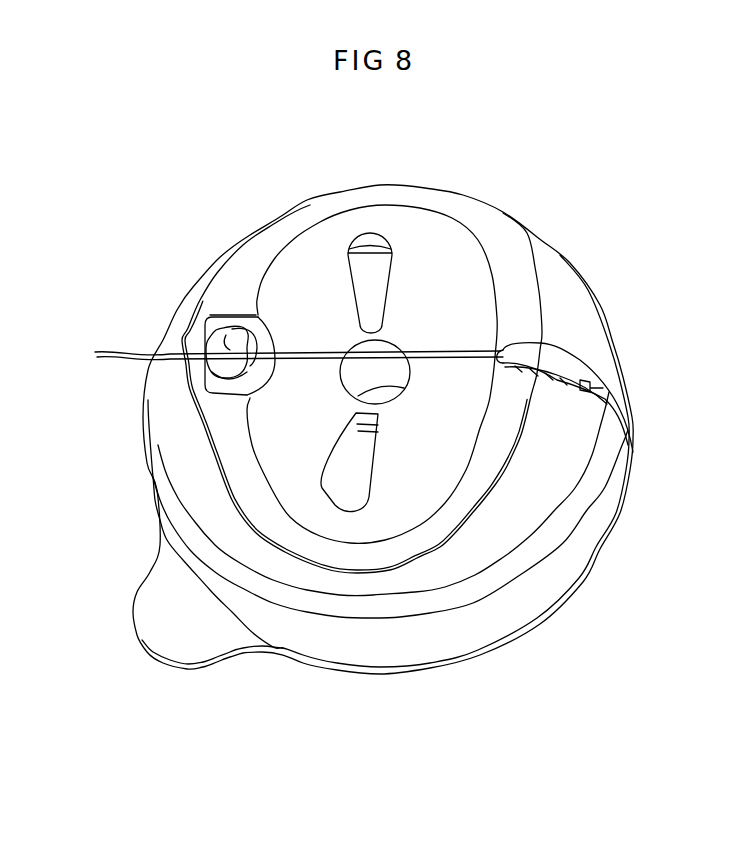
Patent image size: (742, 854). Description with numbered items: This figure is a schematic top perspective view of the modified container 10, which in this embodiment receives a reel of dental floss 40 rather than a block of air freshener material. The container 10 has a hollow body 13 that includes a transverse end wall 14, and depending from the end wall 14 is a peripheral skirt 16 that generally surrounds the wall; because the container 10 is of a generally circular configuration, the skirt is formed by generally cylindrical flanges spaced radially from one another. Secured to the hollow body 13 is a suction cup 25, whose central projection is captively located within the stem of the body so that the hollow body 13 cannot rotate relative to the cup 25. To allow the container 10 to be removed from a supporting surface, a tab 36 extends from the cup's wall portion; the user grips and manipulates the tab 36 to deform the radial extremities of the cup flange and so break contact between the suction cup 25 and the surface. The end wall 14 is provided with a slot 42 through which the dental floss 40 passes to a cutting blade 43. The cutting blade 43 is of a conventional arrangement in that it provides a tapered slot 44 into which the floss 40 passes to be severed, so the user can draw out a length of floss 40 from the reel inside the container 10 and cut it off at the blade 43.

The container 10 is at (588, 188).
The hollow body 13 is at (612, 295).
The end wall 14 is at (440, 452).
The peripheral skirt 16 is at (620, 518).
The suction cup 25 is at (585, 594).
The tab 36 is at (195, 644).
The dental floss 40 is at (447, 354).
The slot 42 is at (567, 370).
The cutting blade 43 is at (225, 340).
The tapered slot 44 is at (242, 392).